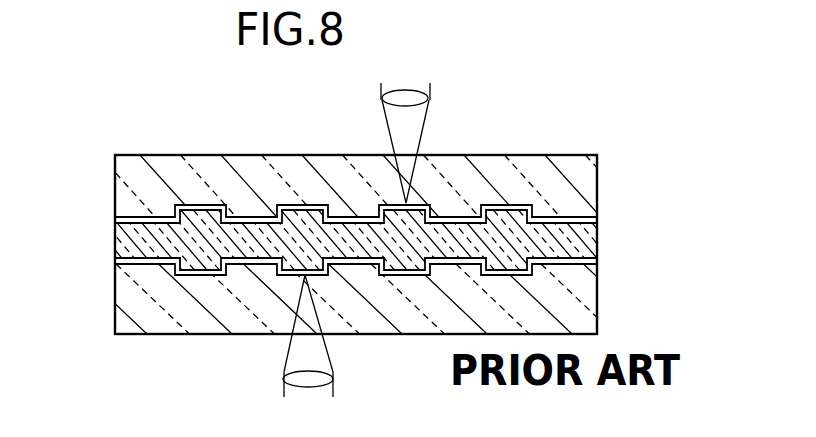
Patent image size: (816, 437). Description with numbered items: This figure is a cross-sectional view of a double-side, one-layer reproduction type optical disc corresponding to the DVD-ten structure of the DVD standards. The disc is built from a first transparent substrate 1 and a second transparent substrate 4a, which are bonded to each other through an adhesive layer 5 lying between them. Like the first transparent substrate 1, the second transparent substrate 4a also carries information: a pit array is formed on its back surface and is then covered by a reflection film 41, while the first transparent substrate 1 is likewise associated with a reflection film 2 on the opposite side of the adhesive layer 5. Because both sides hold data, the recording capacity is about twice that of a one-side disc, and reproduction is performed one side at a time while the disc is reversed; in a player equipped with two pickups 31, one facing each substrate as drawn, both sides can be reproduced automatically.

The second transparent substrate 4a is at (157, 170).
The reflection film 41 is at (115, 218).
The adhesive layer 5 is at (120, 250).
The reflection film 2 is at (120, 267).
The first transparent substrate 1 is at (149, 333).
The pickup 31 is at (380, 98).